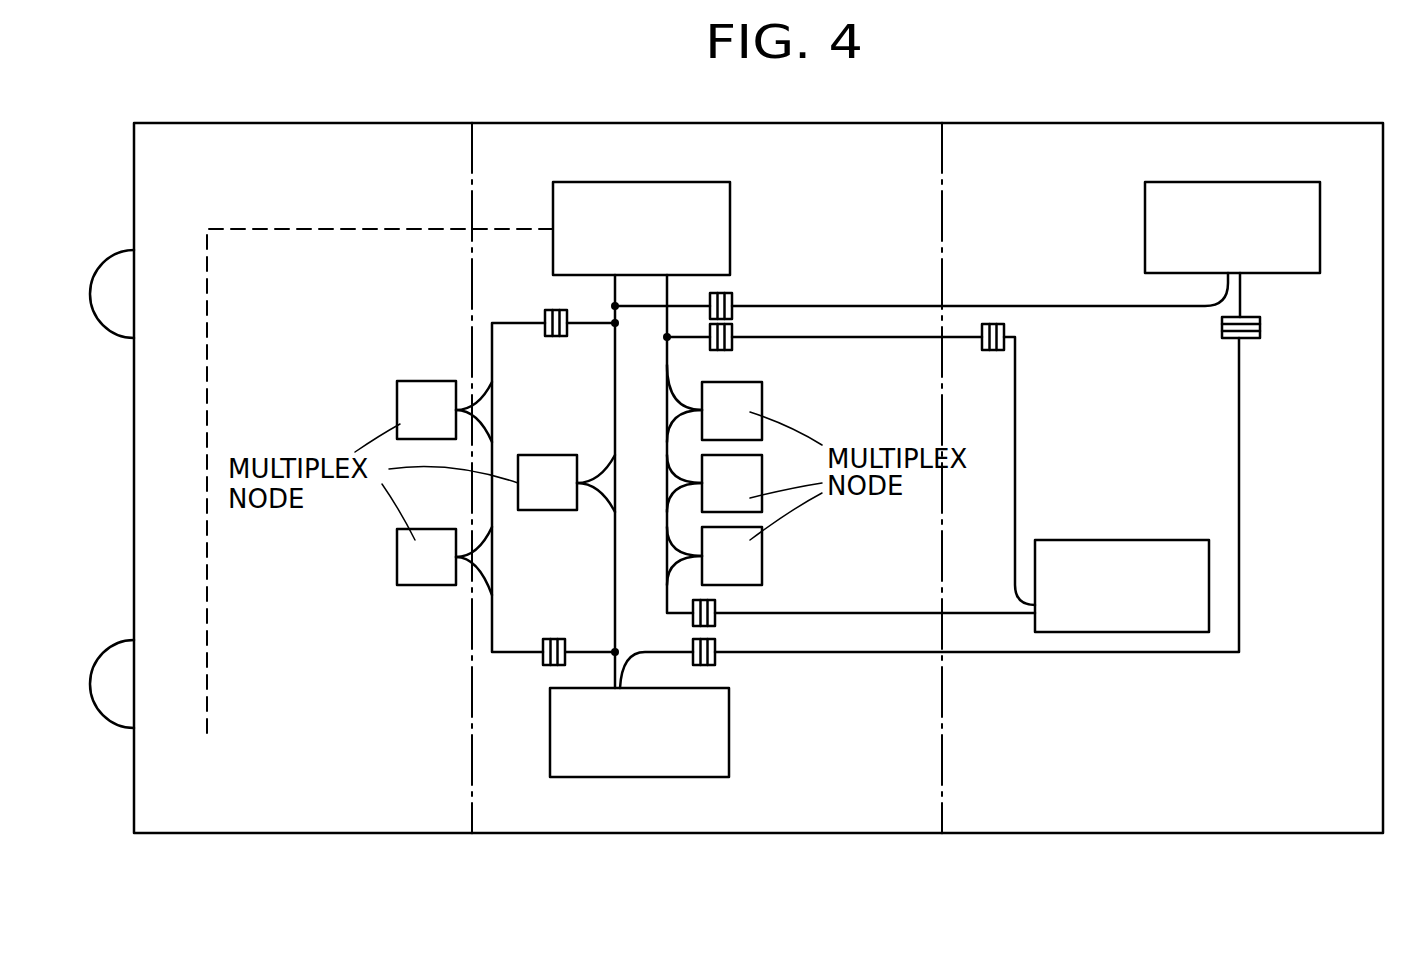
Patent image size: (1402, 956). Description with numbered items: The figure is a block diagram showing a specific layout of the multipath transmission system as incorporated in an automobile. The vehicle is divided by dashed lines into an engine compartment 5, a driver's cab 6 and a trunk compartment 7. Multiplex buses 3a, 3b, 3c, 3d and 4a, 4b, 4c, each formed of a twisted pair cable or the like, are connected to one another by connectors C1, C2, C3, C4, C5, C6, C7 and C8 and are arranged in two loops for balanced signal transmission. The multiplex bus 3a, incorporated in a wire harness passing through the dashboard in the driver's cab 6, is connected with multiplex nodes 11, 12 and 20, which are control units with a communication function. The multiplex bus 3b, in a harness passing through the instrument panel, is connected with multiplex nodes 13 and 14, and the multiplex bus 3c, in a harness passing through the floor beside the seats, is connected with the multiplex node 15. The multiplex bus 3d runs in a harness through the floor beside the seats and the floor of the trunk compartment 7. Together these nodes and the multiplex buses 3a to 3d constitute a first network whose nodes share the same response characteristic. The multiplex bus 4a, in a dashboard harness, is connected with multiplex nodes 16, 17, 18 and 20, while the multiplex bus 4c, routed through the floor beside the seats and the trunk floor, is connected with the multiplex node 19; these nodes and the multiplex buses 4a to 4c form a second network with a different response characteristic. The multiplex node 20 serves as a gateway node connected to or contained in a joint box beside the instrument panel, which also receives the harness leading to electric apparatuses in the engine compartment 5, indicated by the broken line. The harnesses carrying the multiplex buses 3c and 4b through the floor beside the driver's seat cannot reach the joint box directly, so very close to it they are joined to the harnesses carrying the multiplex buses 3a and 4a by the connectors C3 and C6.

The engine compartment 5 is at (378, 123).
The driver's cab 6 is at (872, 123).
The trunk compartment 7 is at (1322, 123).
The multiplex node 20 is at (733, 215).
The multiplex node 15 is at (1145, 210).
The multiplex node 19 is at (1152, 540).
The multiplex node 12 is at (730, 764).
The multiplex node 11 is at (542, 512).
The multiplex node 13 is at (397, 396).
The multiplex node 14 is at (397, 550).
The multiplex node 16 is at (768, 400).
The multiplex node 17 is at (765, 476).
The multiplex node 18 is at (765, 545).
The multiplex bus 3a is at (615, 380).
The multiplex bus 3b is at (518, 326).
The multiplex bus 3c is at (885, 305).
The multiplex bus 3d is at (893, 655).
The multiplex bus 4a is at (667, 585).
The multiplex bus 4b is at (890, 340).
The multiplex bus 4c is at (1015, 445).
The connector C1 is at (550, 310).
The connector C2 is at (543, 660).
The connector C3 is at (735, 300).
The connector C4 is at (1262, 325).
The connector C5 is at (718, 658).
The connector C6 is at (735, 344).
The connector C7 is at (1006, 330).
The connector C8 is at (718, 608).